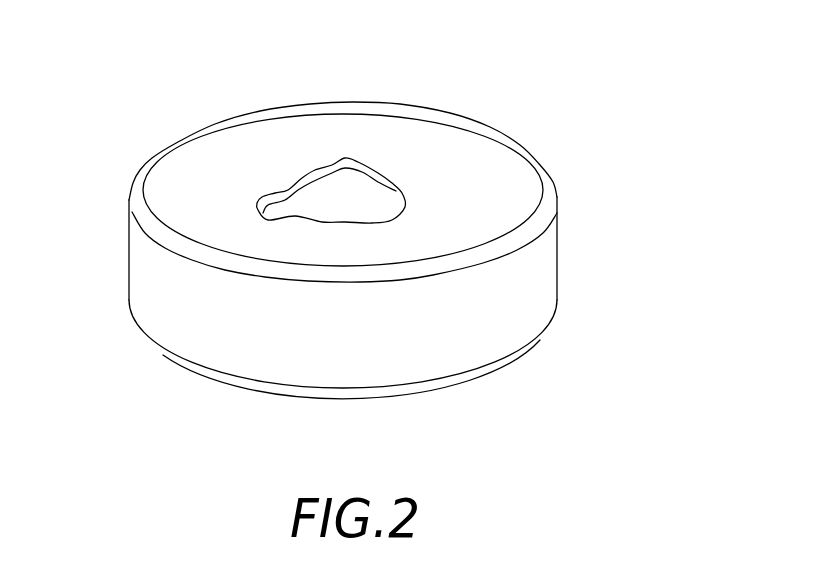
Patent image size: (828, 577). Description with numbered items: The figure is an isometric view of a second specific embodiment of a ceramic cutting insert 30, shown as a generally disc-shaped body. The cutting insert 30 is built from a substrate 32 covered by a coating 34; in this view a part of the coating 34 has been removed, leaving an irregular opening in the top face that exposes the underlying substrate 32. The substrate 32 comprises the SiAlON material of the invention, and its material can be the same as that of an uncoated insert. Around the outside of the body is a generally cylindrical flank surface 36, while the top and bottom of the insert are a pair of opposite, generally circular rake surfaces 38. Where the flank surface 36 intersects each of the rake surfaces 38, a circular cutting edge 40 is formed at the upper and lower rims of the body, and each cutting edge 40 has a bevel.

The cutting insert 30 is at (379, 225).
The substrate 32 is at (327, 192).
The coating 34 is at (363, 163).
The flank surface 36 is at (183, 327).
The rake surfaces 38 is at (483, 144).
The cutting edges 40 is at (155, 223).